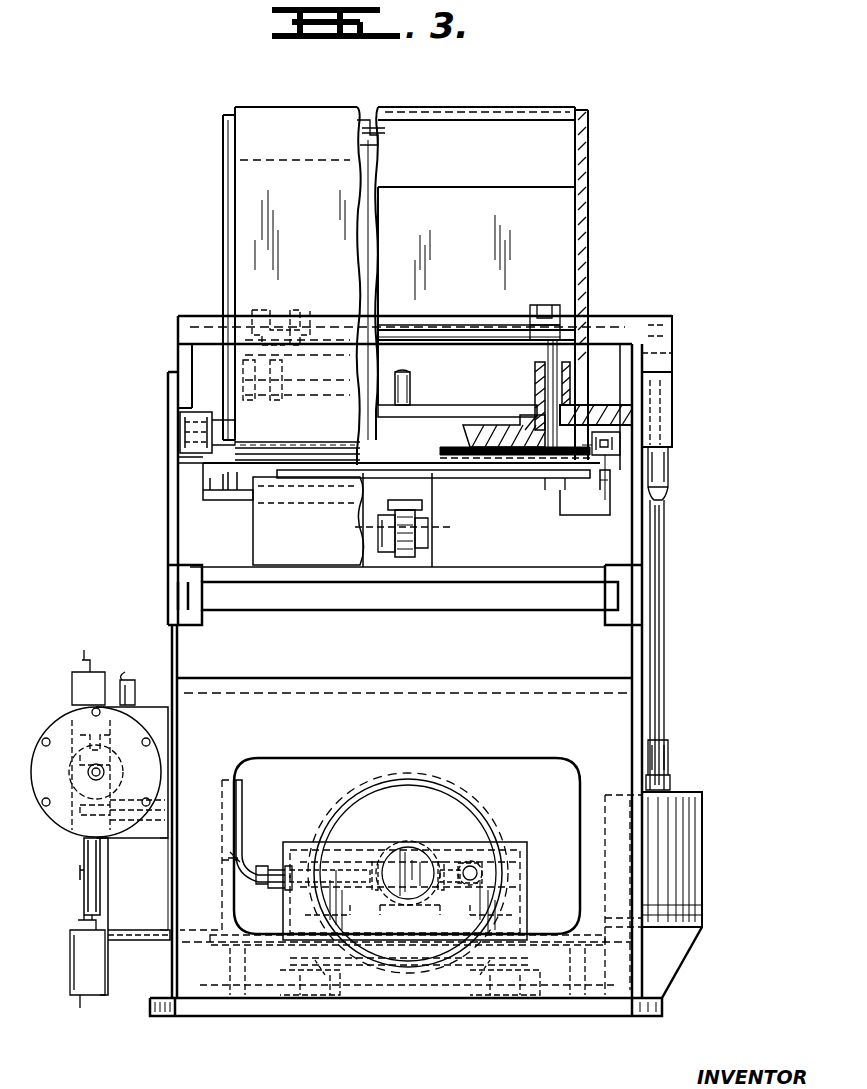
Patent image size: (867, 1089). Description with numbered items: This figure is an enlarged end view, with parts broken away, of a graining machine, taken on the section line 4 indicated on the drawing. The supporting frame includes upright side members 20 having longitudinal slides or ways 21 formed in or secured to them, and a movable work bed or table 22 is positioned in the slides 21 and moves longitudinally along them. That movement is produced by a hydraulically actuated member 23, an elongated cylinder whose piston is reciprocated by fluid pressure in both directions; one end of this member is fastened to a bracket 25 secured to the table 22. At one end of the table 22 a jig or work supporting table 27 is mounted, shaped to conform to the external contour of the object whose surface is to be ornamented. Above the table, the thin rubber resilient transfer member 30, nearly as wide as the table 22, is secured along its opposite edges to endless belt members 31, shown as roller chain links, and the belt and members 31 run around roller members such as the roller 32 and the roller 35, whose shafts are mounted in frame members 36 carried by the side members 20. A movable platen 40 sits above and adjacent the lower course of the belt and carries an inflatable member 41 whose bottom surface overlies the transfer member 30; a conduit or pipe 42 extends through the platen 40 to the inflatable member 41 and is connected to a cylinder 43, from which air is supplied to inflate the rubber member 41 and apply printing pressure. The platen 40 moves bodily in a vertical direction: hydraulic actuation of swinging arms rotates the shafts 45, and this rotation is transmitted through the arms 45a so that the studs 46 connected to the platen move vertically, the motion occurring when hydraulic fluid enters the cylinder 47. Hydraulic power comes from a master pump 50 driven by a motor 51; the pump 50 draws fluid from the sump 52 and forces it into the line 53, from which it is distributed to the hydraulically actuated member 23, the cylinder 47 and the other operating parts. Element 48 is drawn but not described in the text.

The section line 4 is at (407, 145).
The upright side members 20 is at (168, 620).
The longitudinal slides or ways 21 is at (192, 565).
The movable work bed or table 22 is at (512, 495).
The hydraulically actuated member 23 is at (415, 522).
The bracket 25 is at (428, 550).
The jig or fixture or work supporting table 27 is at (265, 512).
The resilient transfer member 30 is at (515, 108).
The endless belt members 31 is at (590, 452).
The roller member 32 is at (370, 438).
The roller member 35 is at (362, 112).
The frame members 36 is at (125, 672).
The movable platen 40 is at (560, 405).
The inflatable member 41 is at (482, 420).
The conduit or pipe 42 is at (414, 392).
The cylinder 43 is at (60, 725).
The shafts 45 is at (410, 330).
The arms 45a is at (530, 322).
The studs 46 is at (535, 360).
The cylinder 47 is at (690, 814).
The column 48 is at (668, 372).
The master pump 50 is at (482, 838).
The motor 51 is at (466, 806).
The sump 52 is at (495, 940).
The line 53 is at (240, 814).